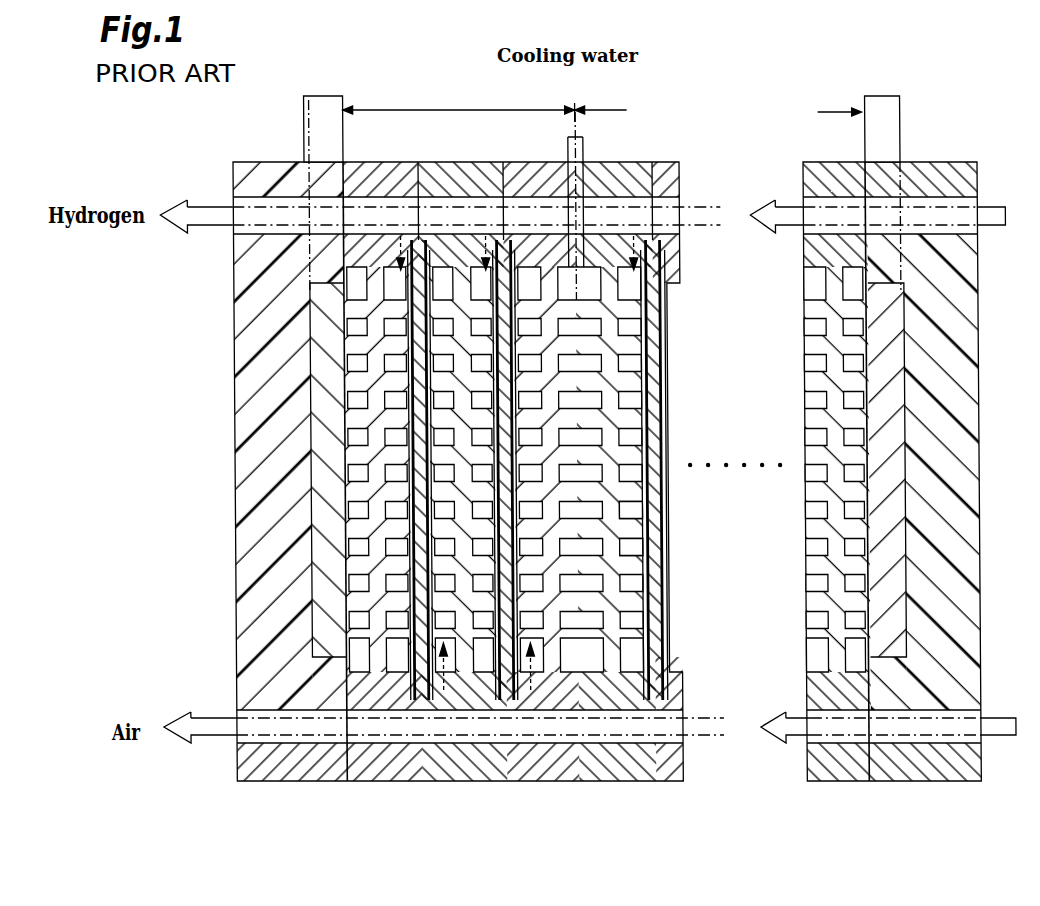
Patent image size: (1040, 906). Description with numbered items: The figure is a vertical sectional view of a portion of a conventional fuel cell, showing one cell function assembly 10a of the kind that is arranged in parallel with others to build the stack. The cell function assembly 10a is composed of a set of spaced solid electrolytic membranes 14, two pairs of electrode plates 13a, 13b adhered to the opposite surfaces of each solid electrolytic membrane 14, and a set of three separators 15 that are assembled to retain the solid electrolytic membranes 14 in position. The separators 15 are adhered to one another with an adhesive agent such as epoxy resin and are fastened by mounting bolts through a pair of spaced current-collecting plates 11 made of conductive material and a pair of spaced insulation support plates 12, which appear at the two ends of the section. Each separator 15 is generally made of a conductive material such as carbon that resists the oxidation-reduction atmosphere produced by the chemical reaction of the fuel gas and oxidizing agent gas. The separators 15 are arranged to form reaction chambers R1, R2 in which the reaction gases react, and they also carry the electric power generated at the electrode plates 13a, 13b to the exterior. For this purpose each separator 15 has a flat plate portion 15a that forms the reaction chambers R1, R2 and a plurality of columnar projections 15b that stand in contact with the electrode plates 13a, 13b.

The cell function assembly 10a is at (480, 92).
The current-collecting plate 11 is at (304, 128).
The insulation support plate 12 is at (240, 383).
The electrode plate 13a is at (663, 290).
The electrode plate 13b is at (665, 376).
The solid electrolytic membrane 14 is at (416, 268).
The separator 15 is at (374, 177).
The flat plate portion 15a is at (648, 514).
The columnar projection 15b is at (648, 544).
The reaction chamber R1 is at (636, 663).
The reaction chamber R2 is at (440, 690).